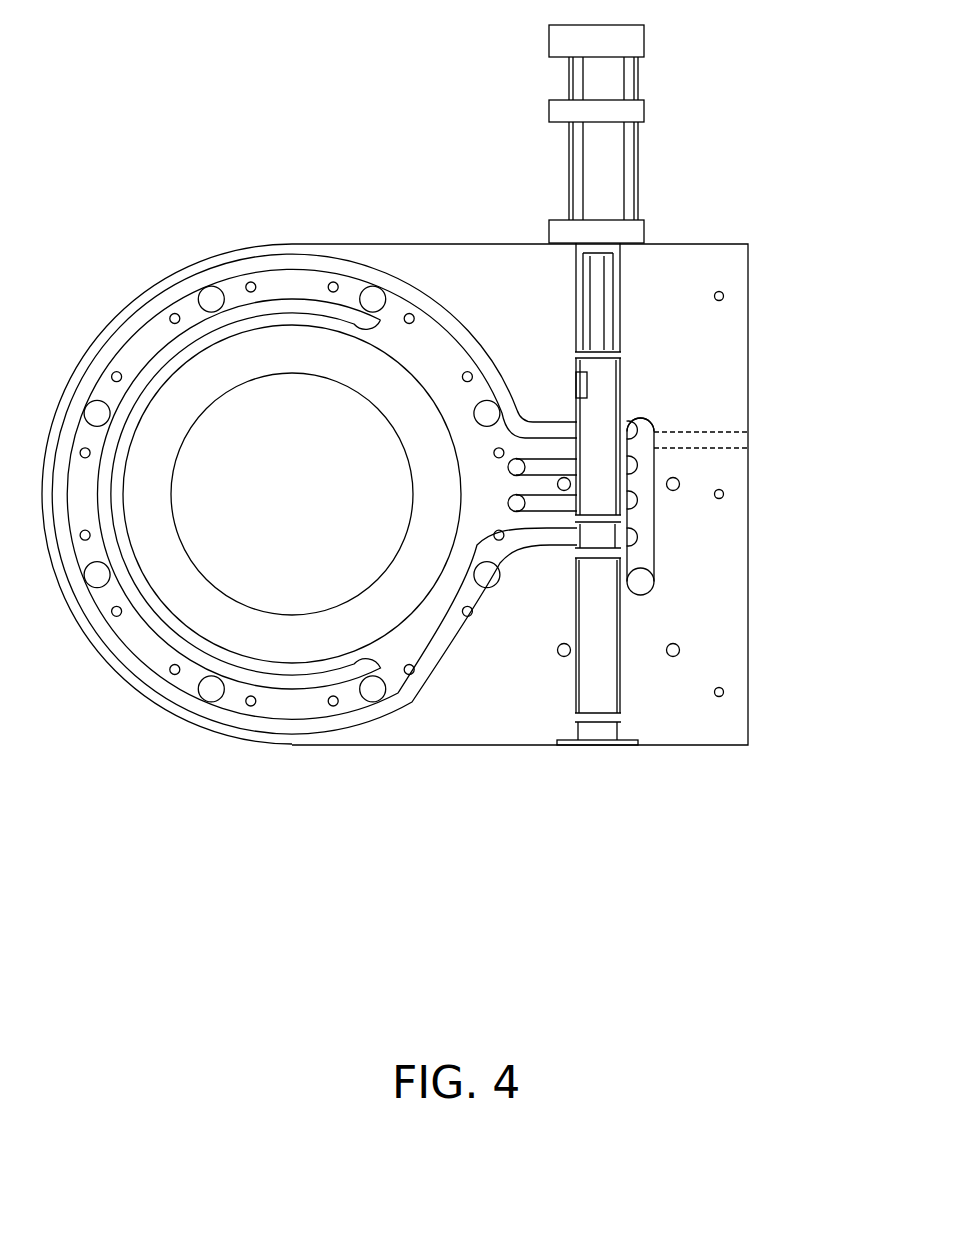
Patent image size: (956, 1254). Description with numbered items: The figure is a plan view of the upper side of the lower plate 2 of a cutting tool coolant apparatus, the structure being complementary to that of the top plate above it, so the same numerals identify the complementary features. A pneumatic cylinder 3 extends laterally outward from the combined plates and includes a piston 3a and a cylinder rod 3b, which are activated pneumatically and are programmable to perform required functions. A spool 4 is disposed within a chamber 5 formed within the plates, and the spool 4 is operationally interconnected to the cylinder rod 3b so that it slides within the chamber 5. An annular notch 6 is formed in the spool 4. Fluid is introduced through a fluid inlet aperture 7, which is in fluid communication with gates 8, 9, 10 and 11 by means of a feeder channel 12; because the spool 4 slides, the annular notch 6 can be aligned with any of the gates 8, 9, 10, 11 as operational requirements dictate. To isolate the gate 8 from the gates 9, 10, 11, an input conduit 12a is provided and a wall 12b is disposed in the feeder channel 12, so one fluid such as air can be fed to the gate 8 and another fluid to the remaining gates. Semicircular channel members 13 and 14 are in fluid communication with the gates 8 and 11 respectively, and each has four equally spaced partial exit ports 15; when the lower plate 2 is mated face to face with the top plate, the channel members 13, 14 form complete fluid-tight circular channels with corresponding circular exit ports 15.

The lower plate 2 is at (705, 726).
The pneumatic cylinder 3 is at (627, 42).
The piston 3a is at (603, 135).
The cylinder rod 3b is at (598, 290).
The spool 4 is at (605, 690).
The chamber 5 is at (613, 330).
The annular notch 6 is at (600, 543).
The fluid inlet aperture 7 is at (643, 581).
The gate 8 is at (627, 430).
The gate 9 is at (627, 467).
The gate 10 is at (625, 505).
The gate 11 is at (627, 540).
The feeder channel 12 is at (646, 497).
The input conduit 12a is at (717, 440).
The wall 12b is at (632, 450).
The semicircular channel member 13 is at (462, 338).
The semicircular channel member 14 is at (410, 640).
The partial exit port 15 is at (208, 300).